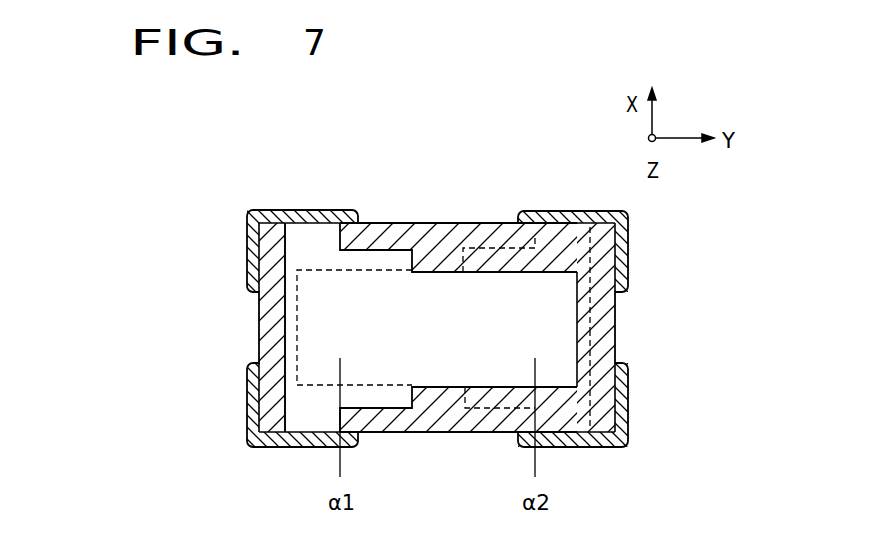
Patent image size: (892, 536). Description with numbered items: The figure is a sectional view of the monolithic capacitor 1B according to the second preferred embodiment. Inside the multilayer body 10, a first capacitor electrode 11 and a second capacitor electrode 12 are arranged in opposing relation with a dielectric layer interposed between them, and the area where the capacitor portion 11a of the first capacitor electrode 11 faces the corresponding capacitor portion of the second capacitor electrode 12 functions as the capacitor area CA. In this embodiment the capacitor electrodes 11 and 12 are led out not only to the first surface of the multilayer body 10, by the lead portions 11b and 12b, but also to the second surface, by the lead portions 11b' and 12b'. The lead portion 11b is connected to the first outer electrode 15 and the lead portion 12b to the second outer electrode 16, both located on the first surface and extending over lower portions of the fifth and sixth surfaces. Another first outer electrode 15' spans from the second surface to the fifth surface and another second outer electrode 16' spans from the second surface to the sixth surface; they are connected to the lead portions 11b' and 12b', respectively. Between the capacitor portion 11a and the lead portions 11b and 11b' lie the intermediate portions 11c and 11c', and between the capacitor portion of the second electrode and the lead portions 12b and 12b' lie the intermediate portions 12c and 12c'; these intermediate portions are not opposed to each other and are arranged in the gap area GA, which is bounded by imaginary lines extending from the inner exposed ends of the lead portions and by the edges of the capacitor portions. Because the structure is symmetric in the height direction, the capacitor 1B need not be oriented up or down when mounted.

The monolithic capacitor 1B is at (273, 104).
The multilayer body 10 is at (259, 330).
The first capacitor electrode 11 is at (482, 298).
The second capacitor electrode 12 is at (481, 290).
The capacitor portion 11a is at (550, 322).
The lead portion 11b is at (292, 418).
The lead portion 11b' is at (285, 245).
The intermediate portion 11c is at (458, 441).
The intermediate portion 11c' is at (458, 217).
The lead portion 12b is at (608, 421).
The lead portion 12b' is at (580, 237).
The intermediate portion 12c is at (500, 444).
The intermediate portion 12c' is at (504, 226).
The first outer electrode 15 is at (272, 405).
The first outer electrode 15' is at (261, 251).
The second outer electrode 16 is at (609, 405).
The second outer electrode 16' is at (610, 251).
The gap area GA is at (432, 250).
The capacitor area CA is at (378, 327).